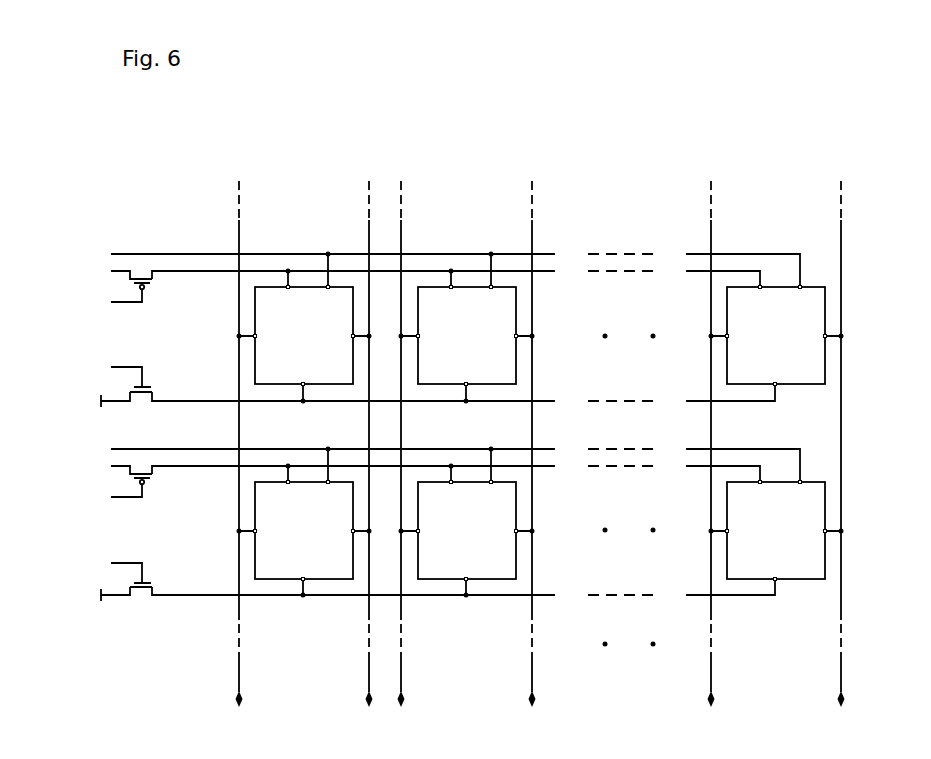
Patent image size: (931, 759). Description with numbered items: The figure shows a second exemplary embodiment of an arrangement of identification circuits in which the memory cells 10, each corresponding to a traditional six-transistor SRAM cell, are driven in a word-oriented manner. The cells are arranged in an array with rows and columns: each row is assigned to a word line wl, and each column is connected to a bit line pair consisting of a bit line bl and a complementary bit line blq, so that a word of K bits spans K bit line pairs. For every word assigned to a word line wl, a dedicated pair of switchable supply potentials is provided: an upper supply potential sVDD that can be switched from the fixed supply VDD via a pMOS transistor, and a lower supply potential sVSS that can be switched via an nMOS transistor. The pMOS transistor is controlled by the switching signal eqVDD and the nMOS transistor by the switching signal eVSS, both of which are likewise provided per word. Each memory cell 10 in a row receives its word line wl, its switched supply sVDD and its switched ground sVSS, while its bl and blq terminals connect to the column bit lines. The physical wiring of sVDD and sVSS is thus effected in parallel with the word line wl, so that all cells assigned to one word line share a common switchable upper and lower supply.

The memory cell 10 is at (309, 345).
The bit line bl is at (469, 456).
The complementary bit line blq is at (587, 456).
The word line wl is at (432, 356).
The upper supply potential VDD is at (110, 374).
The switchable upper supply potential sVDD is at (456, 380).
The switching signal for the upper supply potential eqVDD is at (105, 405).
The switching signal for the lower supply potential eVSS is at (98, 465).
The switchable lower supply potential sVSS is at (438, 492).